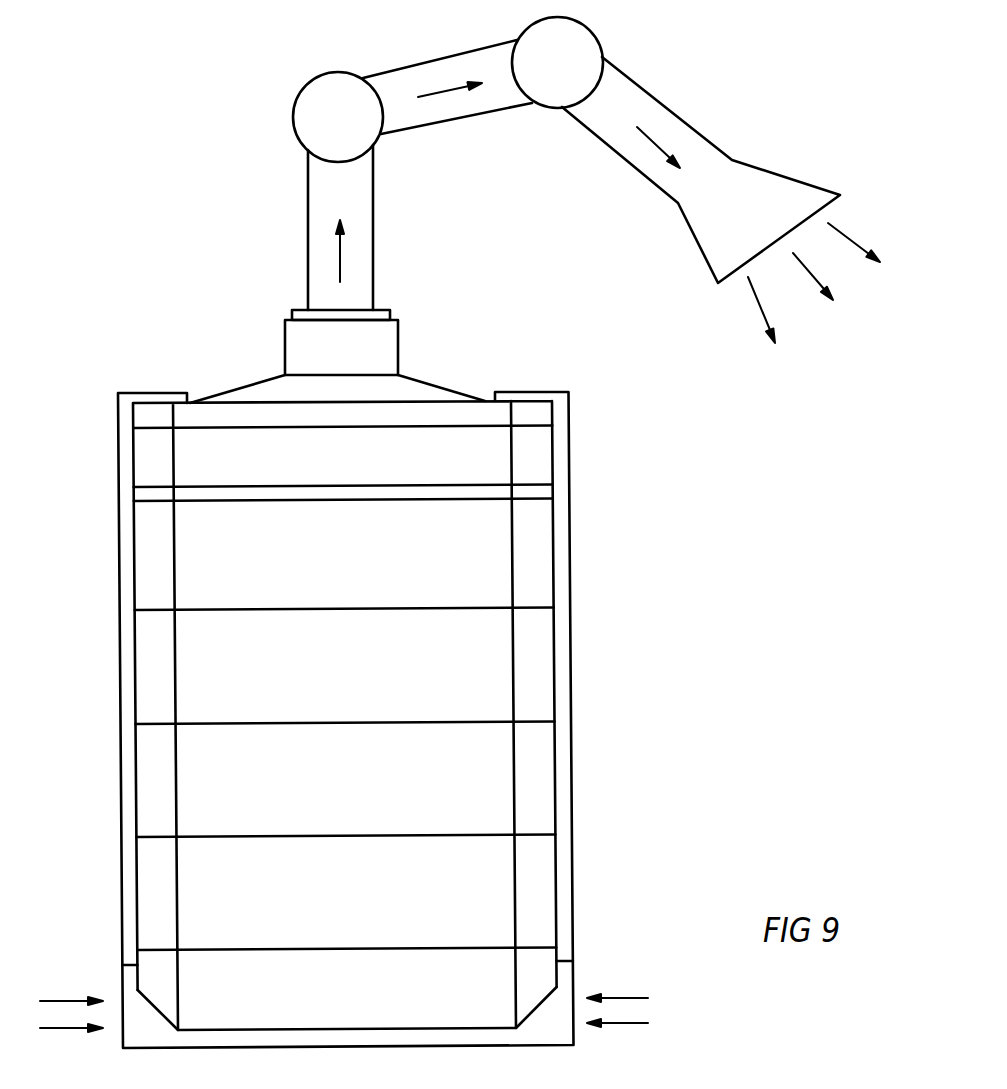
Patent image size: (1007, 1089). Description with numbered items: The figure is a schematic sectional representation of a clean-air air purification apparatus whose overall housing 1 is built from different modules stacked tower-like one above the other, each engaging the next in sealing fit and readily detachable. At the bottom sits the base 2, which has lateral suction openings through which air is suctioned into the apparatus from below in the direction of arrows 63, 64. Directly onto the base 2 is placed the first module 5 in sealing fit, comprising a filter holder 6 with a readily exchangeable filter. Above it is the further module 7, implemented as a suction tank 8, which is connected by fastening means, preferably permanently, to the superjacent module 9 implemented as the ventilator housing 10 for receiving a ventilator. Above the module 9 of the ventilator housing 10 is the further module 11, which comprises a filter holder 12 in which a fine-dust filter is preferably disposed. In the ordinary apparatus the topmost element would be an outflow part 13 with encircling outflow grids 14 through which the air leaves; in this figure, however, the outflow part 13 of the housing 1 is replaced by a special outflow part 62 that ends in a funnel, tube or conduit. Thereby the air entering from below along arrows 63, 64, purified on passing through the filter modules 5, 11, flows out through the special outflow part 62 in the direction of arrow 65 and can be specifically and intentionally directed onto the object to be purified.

The overall housing 1 is at (458, 767).
The base 2 is at (535, 988).
The first module 5 is at (425, 890).
The filter holder 6 is at (488, 920).
The further module 7 is at (424, 743).
The suction tank 8 is at (572, 777).
The module 9 is at (426, 634).
The ventilator housing 10 is at (495, 673).
The further module 11 is at (426, 531).
The filter holder 12 is at (487, 572).
The outflow part 13 is at (425, 447).
The outflow grids 14 is at (485, 468).
The special outflow part 62 is at (380, 358).
The arrow 63 is at (69, 1031).
The arrow 64 is at (617, 1026).
The arrow 65 is at (338, 268).